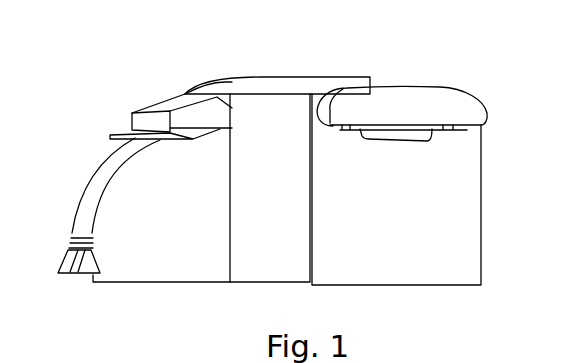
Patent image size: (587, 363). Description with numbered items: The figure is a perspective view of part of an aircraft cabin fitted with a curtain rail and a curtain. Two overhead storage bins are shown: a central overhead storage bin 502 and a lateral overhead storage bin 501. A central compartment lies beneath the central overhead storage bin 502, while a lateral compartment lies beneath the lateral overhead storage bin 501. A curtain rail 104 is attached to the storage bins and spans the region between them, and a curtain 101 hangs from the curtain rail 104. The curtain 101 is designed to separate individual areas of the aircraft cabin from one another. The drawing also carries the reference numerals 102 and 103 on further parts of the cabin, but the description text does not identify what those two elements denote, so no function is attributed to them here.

The curtain 101 is at (270, 272).
The right housing body 102 is at (457, 222).
The flexible arm with nozzle 103 is at (142, 198).
The curtain rail 104 is at (261, 84).
The lateral overhead storage bin 501 is at (160, 102).
The central overhead storage bin 502 is at (472, 95).